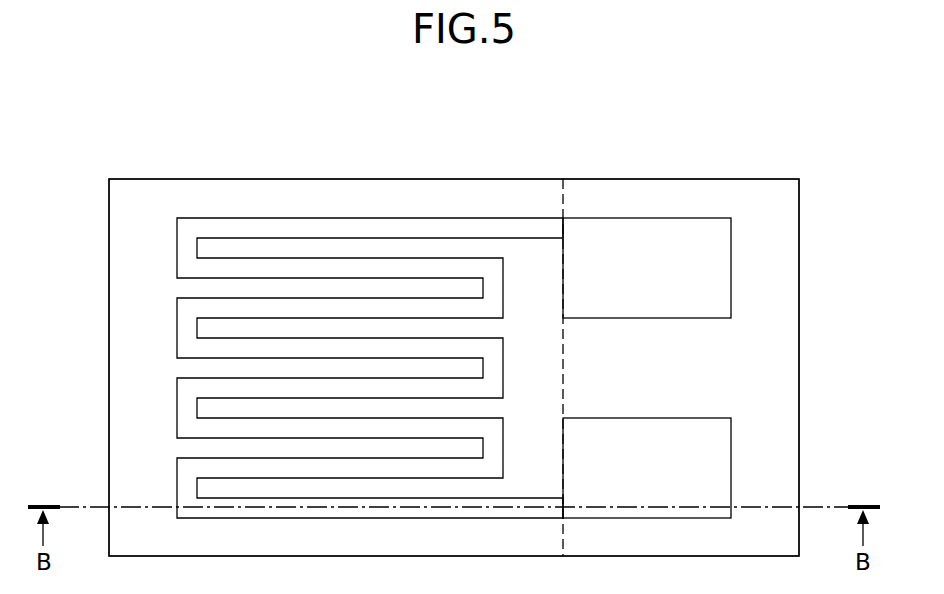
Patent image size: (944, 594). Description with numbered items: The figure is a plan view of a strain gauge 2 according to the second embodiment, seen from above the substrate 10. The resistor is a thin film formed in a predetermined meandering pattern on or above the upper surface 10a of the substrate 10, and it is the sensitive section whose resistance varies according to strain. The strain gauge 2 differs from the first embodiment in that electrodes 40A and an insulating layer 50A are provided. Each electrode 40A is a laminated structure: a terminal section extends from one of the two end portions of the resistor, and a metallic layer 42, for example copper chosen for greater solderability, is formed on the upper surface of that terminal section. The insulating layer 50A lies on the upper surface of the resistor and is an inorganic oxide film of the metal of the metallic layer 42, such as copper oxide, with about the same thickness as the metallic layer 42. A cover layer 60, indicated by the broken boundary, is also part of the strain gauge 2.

The strain gauge 2 is at (46, 123).
The substrate 10 is at (803, 261).
The upper surface 10a is at (770, 367).
The electrode 40A is at (659, 318).
The metallic layer 42 is at (653, 250).
The insulating layer 50A is at (355, 230).
The cover layer 60 is at (563, 200).